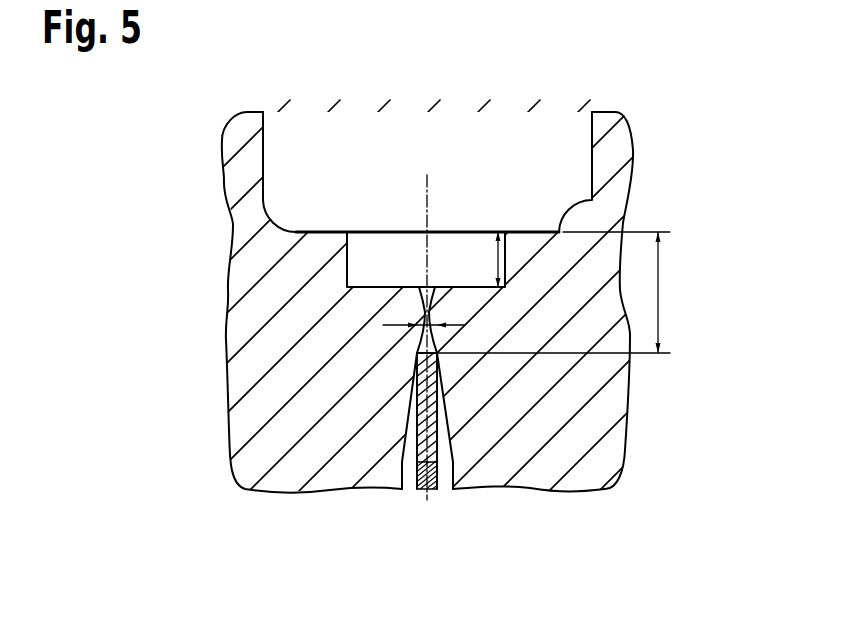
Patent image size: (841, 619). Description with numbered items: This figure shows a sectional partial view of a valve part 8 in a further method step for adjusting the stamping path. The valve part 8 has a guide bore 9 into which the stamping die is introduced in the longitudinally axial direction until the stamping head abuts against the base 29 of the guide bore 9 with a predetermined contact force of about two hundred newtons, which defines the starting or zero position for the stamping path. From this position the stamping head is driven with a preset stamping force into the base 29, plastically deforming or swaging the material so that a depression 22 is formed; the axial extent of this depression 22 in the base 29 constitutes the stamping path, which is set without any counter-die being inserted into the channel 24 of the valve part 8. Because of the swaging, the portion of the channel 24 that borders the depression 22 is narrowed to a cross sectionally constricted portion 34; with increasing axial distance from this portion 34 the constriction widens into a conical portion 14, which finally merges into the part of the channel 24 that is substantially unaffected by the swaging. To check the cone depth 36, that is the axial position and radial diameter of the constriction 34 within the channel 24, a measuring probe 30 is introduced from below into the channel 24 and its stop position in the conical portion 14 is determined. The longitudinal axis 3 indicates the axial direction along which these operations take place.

The longitudinal axis 3 is at (427, 177).
The valve part 8 is at (613, 413).
The guide bore 9 is at (263, 143).
The conical portion 14 is at (446, 408).
The depression 22 is at (497, 257).
The channel 24 is at (443, 477).
The base 29 is at (537, 232).
The measuring probe 30 is at (425, 482).
The cross sectionally constricted portion 34 is at (397, 323).
The cone depth 36 is at (660, 290).